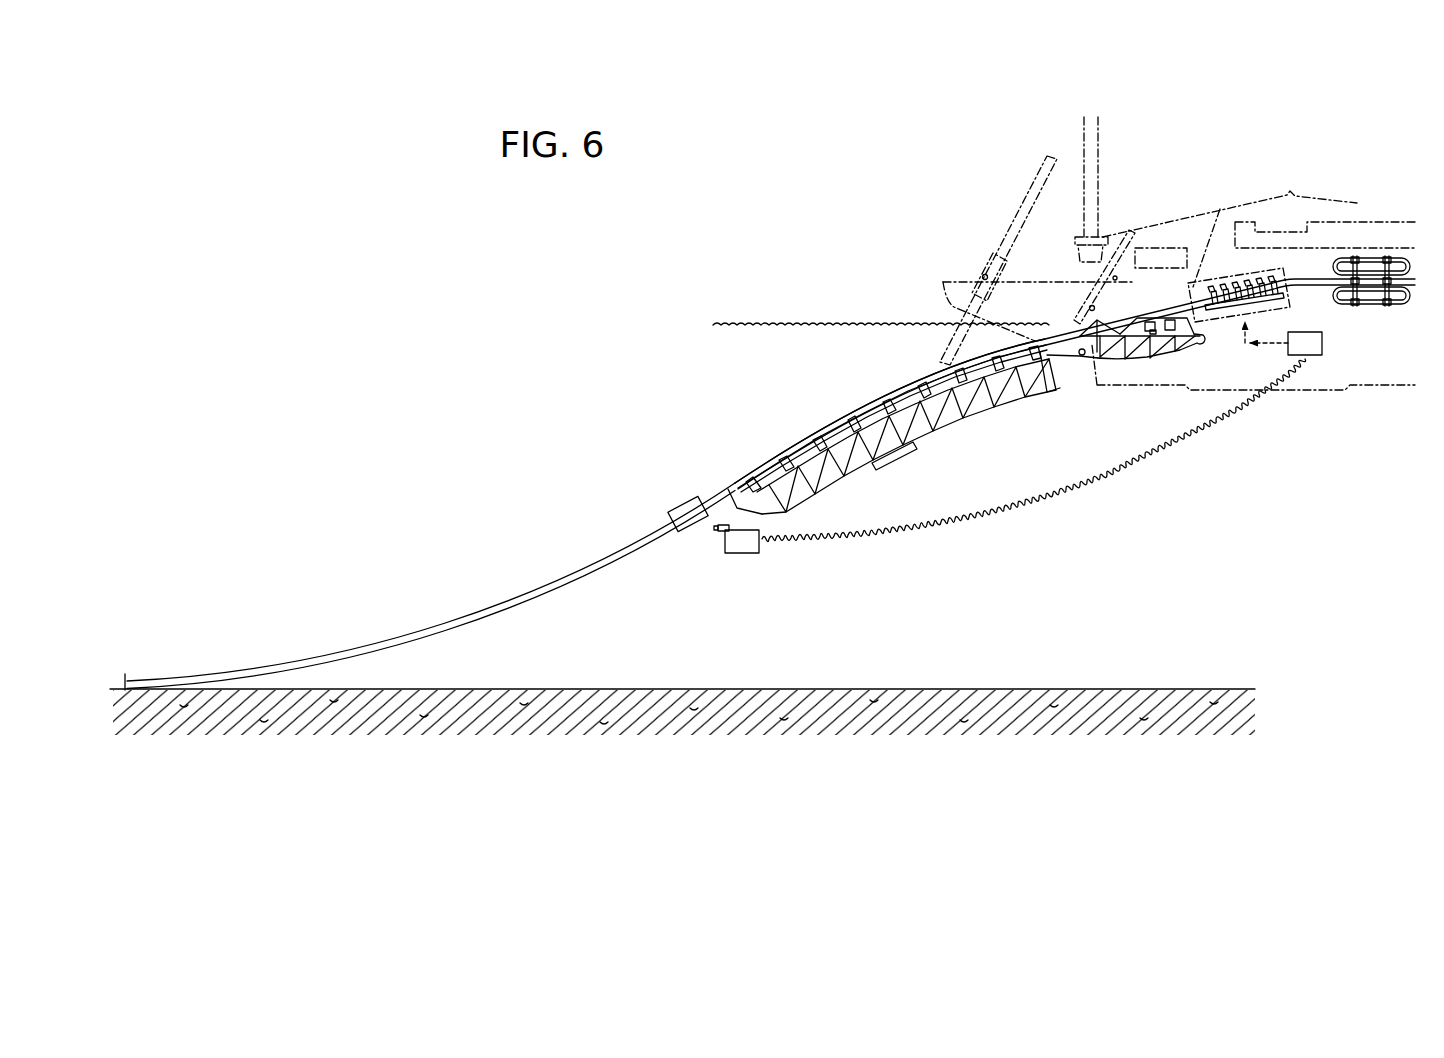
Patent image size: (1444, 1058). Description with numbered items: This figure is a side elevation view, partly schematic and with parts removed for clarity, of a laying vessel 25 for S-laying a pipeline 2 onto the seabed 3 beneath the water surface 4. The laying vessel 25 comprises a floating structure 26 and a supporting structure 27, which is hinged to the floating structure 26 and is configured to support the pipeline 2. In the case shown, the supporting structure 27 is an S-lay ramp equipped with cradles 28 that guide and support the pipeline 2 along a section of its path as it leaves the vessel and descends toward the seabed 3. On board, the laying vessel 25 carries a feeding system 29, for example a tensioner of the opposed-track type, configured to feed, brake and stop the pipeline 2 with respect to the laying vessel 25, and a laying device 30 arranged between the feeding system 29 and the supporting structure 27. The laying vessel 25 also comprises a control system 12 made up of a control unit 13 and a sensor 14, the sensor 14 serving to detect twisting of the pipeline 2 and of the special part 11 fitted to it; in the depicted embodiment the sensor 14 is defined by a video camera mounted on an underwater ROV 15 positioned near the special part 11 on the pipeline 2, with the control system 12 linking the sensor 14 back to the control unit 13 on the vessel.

The pipeline 2 is at (718, 492).
The seabed 3 is at (950, 700).
The water surface 4 is at (803, 337).
The special part 11 is at (676, 493).
The control system 12 is at (1038, 519).
The control unit 13 is at (1318, 343).
The sensor 14 is at (707, 542).
The underwater ROV 15 is at (742, 540).
The laying vessel 25 is at (1192, 155).
The floating structure 26 is at (1150, 372).
The supporting structure 27 is at (963, 417).
The cradles 28 is at (829, 428).
The feeding system 29 is at (1380, 314).
The laying device 30 is at (1300, 295).